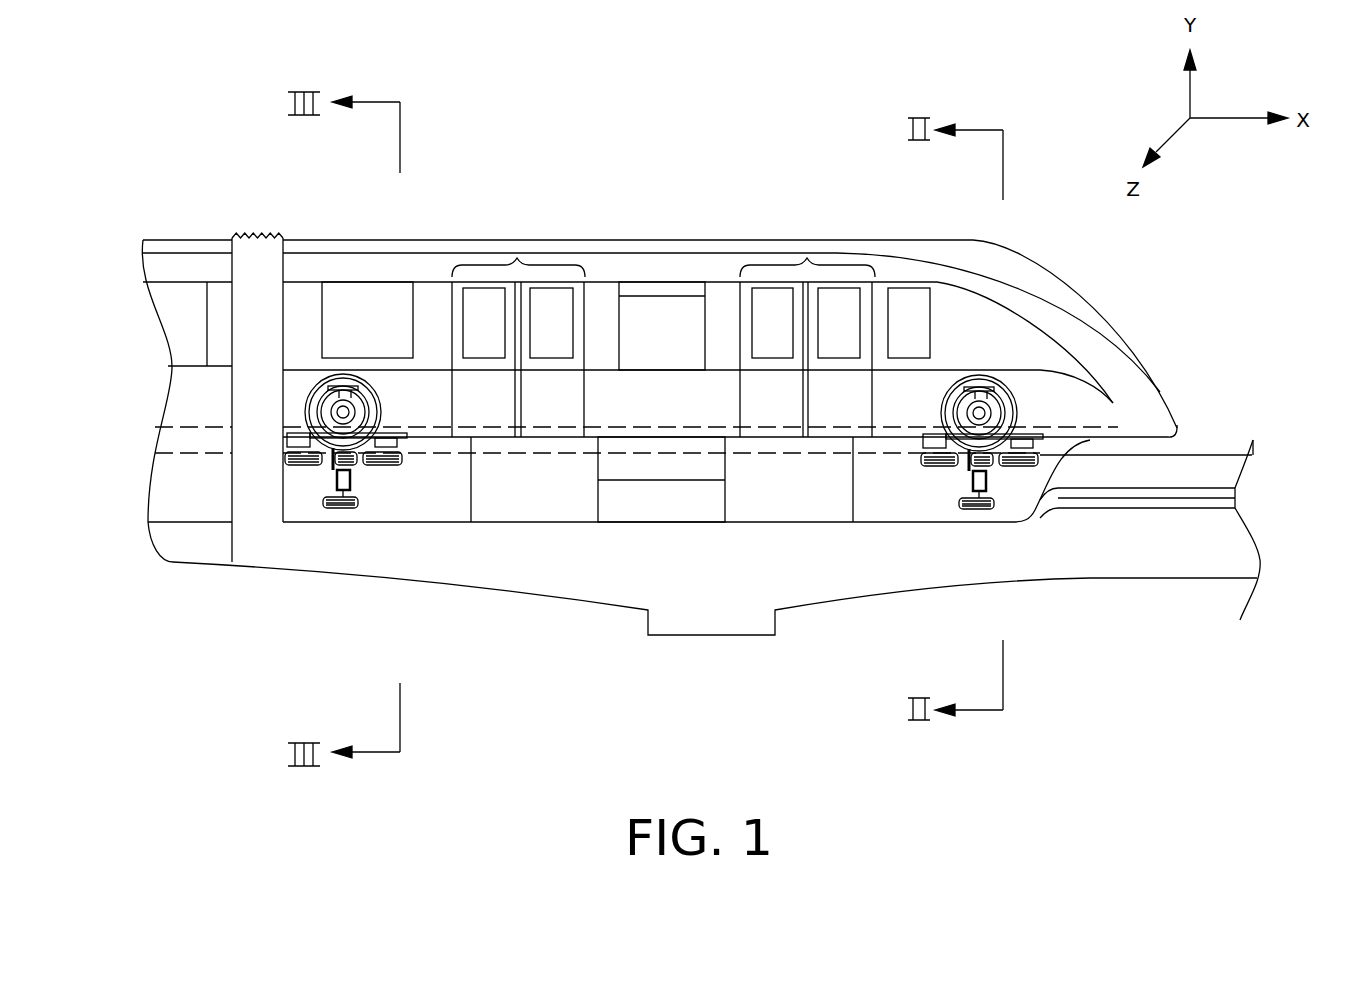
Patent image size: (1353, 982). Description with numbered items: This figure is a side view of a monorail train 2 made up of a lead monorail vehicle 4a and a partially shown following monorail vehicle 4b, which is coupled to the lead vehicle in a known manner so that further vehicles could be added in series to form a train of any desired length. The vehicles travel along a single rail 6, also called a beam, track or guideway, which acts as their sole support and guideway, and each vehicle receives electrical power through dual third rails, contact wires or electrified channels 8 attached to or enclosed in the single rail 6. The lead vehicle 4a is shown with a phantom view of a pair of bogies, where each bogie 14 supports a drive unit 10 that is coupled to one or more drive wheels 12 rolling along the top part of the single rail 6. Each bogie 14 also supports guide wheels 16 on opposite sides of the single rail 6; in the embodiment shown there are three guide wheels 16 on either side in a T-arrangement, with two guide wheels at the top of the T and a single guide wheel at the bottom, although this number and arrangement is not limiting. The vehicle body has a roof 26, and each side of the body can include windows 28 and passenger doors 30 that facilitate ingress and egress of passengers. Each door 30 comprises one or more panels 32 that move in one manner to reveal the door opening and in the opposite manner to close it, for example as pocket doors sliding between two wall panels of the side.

The monorail train 2 is at (458, 115).
The lead monorail vehicle 4a is at (588, 238).
The following monorail vehicle 4b is at (177, 238).
The single rail 6 is at (1180, 547).
The electrified channels 8 is at (1205, 458).
The drive unit 10 is at (317, 388).
The drive wheel 12 is at (345, 385).
The bogie 14 is at (297, 466).
The guide wheel 16 is at (284, 468).
The roof 26 is at (915, 302).
The window 28 is at (350, 297).
The passenger door 30 is at (517, 260).
The panel 32 is at (483, 413).